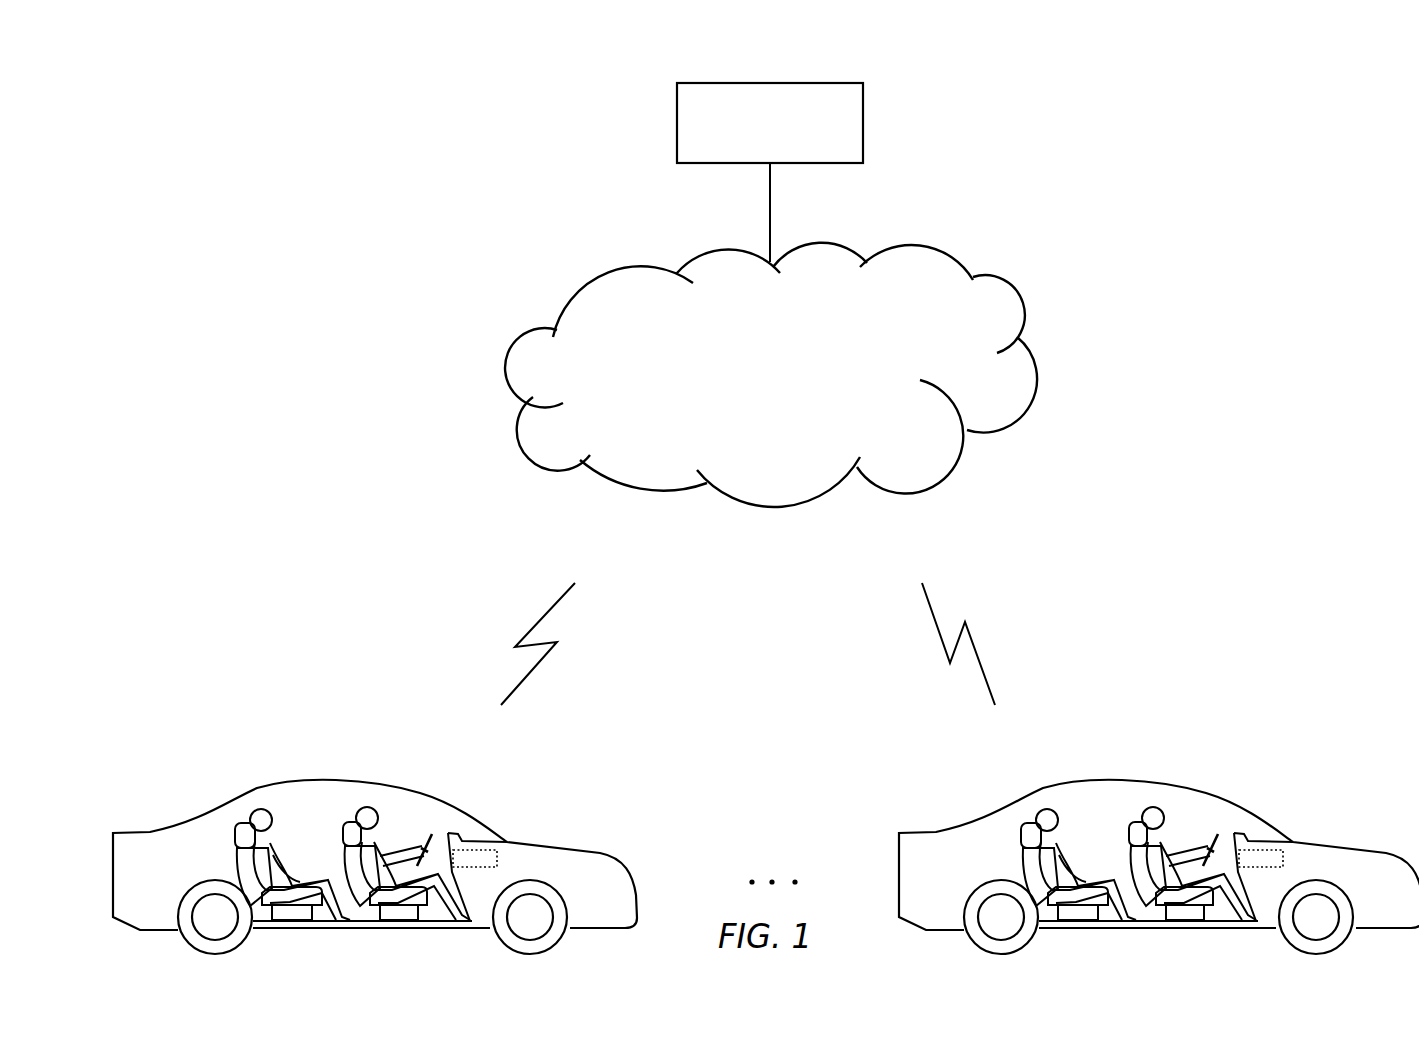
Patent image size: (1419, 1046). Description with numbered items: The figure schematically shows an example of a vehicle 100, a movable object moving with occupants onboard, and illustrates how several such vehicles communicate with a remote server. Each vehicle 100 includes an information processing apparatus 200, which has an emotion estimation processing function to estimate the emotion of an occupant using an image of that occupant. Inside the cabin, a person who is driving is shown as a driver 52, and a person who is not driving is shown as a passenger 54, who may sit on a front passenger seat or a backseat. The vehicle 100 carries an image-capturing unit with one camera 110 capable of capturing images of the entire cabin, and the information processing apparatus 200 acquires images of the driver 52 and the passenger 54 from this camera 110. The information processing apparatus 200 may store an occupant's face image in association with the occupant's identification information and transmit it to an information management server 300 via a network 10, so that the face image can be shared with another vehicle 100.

The information management server 300 is at (842, 70).
The network 10 is at (1010, 268).
The vehicle 100 is at (407, 783).
The camera 110 is at (457, 832).
The information processing apparatus 200 is at (495, 865).
The driver 52 is at (367, 812).
The passenger 54 is at (258, 808).